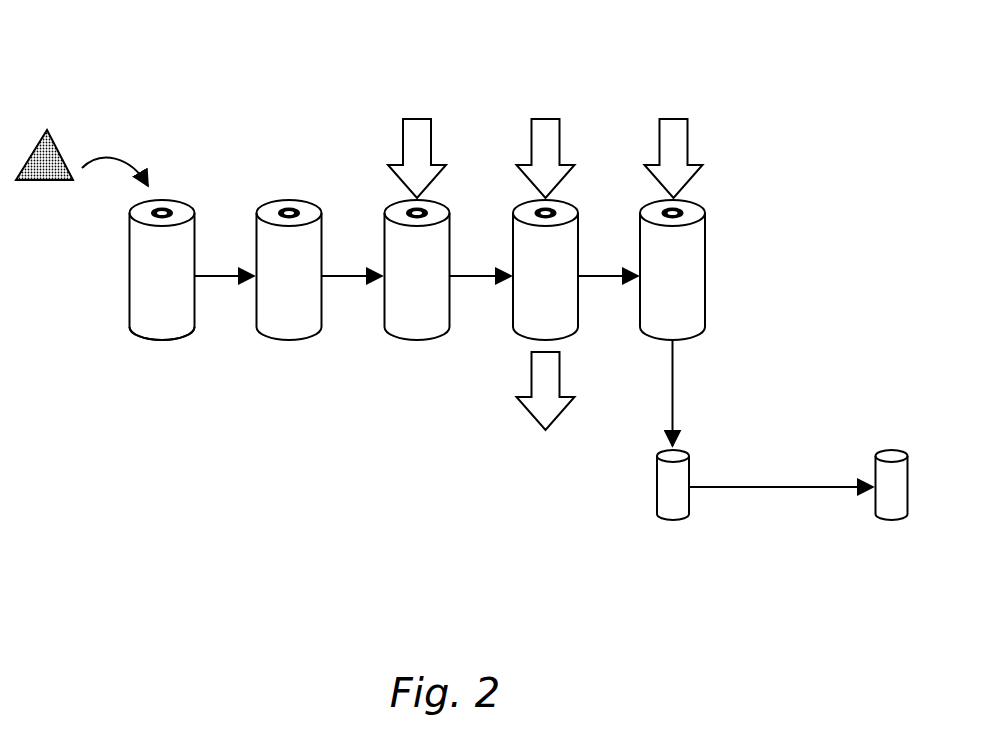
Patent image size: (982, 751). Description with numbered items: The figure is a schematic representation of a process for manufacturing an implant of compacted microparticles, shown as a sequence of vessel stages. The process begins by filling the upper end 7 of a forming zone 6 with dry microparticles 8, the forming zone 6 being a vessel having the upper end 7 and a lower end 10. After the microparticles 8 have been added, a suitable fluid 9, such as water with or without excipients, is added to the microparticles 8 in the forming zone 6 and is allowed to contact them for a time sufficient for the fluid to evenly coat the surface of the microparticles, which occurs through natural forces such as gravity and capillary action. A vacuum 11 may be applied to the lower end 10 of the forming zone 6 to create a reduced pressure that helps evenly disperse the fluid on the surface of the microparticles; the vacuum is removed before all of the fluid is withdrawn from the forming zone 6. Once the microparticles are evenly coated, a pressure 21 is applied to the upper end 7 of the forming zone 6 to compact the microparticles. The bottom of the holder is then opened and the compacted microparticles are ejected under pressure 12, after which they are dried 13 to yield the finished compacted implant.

The forming zone 6 is at (129, 290).
The upper end 7 is at (139, 211).
The dry microparticles 8 is at (62, 152).
The fluid 9 is at (420, 117).
The lower end 10 is at (143, 339).
The vacuum 11 is at (527, 413).
The pressure 12 is at (675, 117).
The drying 13 is at (782, 486).
The pressure 21 is at (548, 117).